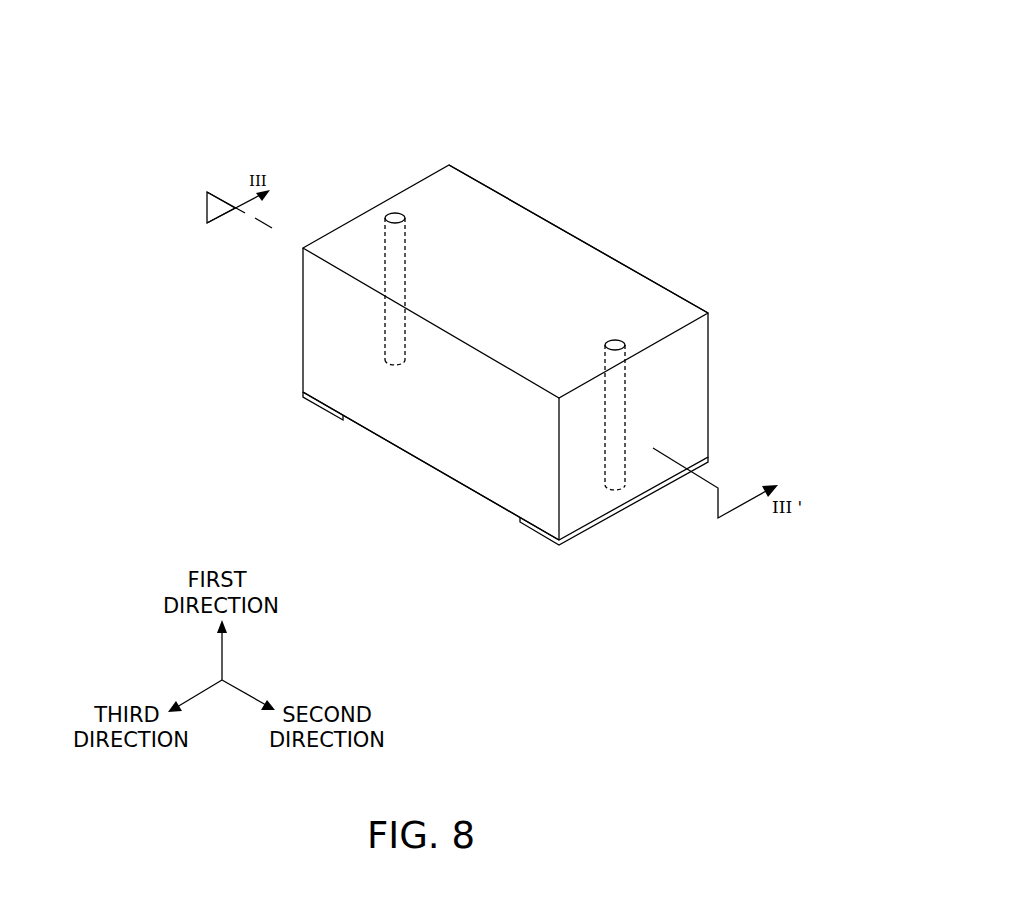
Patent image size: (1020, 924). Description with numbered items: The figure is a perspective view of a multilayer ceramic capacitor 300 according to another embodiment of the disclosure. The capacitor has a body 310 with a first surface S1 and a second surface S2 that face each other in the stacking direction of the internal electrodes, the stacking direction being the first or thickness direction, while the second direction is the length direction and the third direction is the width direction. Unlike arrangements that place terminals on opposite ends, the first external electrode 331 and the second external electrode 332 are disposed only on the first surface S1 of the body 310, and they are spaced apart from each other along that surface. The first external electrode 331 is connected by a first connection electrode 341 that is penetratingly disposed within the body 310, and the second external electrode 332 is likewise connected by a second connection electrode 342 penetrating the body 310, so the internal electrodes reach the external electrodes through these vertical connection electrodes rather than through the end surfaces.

The multilayer ceramic capacitor 300 is at (252, 79).
The body 310 is at (507, 220).
The first connection electrode 341 is at (395, 212).
The second connection electrode 342 is at (615, 340).
The first external electrode 331 is at (323, 411).
The second external electrode 332 is at (538, 538).
The first surface S1 is at (452, 494).
The second surface S2 is at (583, 272).